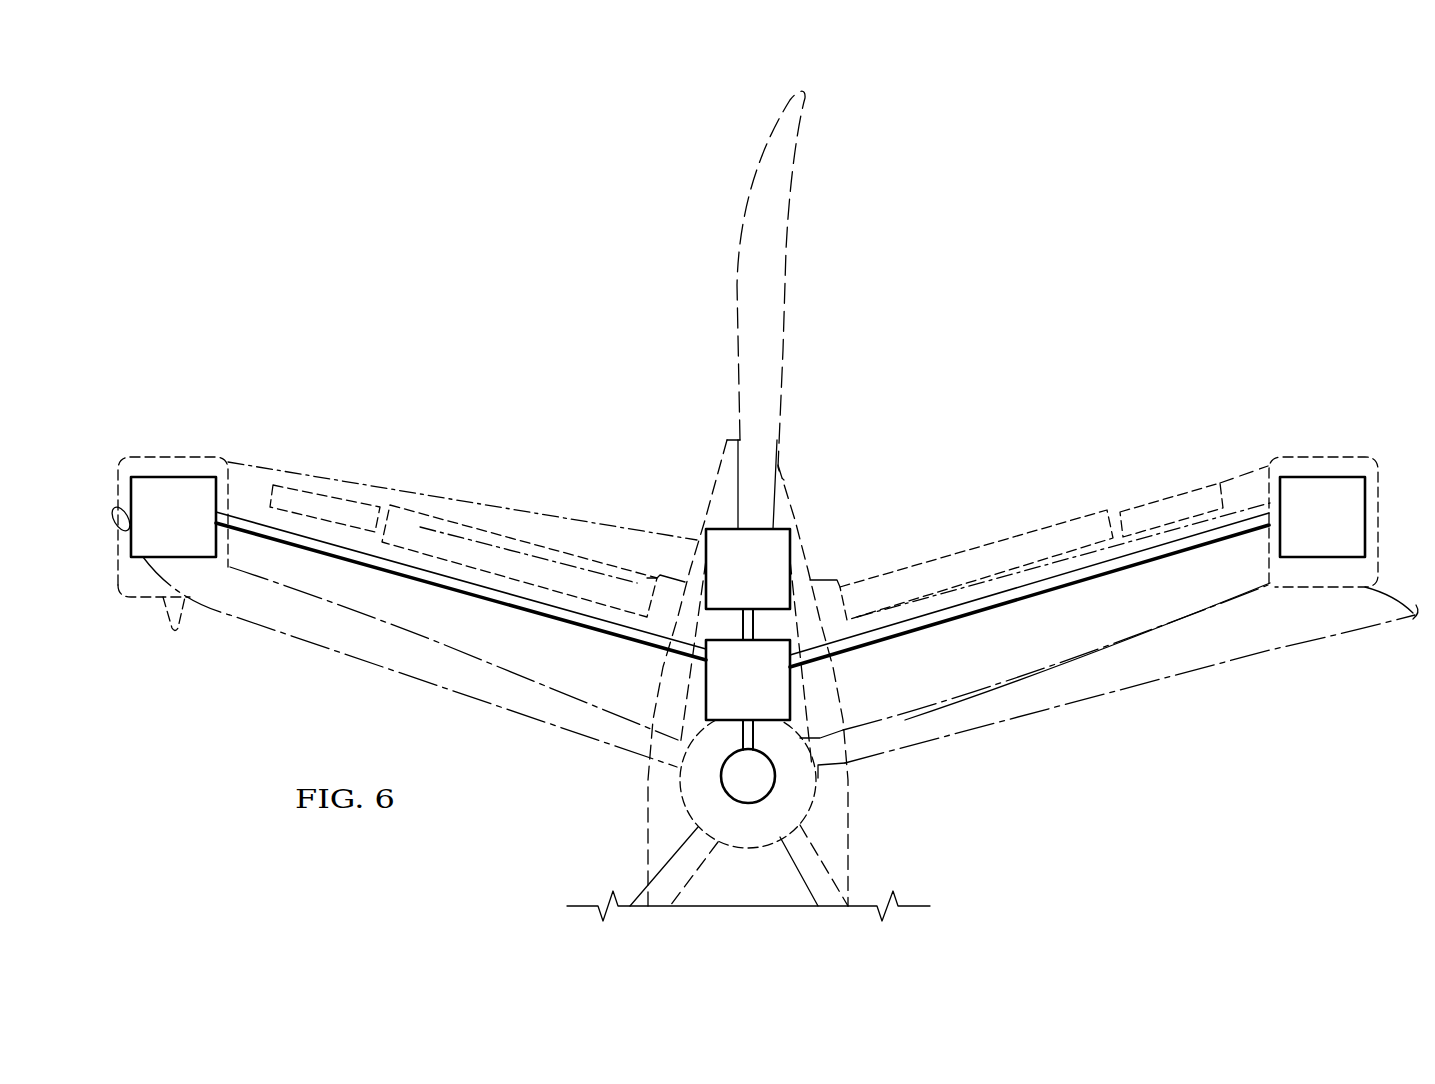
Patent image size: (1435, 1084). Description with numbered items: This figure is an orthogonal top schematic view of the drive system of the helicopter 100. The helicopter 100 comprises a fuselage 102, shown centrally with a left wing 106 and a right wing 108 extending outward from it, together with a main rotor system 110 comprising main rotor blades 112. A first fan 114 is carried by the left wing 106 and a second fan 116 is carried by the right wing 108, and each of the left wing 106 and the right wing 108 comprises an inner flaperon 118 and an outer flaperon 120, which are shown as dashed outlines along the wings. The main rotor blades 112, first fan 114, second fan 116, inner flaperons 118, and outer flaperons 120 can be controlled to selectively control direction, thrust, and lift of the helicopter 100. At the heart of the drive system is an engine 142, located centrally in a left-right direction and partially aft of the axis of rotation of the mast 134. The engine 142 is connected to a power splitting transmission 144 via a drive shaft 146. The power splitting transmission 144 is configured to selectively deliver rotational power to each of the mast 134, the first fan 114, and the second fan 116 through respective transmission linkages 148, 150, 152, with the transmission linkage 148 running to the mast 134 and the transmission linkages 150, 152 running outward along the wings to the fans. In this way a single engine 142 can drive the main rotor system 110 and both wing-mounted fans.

The helicopter 100 is at (983, 352).
The fuselage 102 is at (648, 853).
The left wing 106 is at (1073, 562).
The right wing 108 is at (420, 560).
The main rotor system 110 is at (810, 812).
The main rotor blades 112 is at (1143, 682).
The first fan 114 is at (1342, 533).
The second fan 116 is at (193, 533).
The inner flaperon 118 is at (560, 562).
The outer flaperon 120 is at (297, 488).
The mast 134 is at (723, 777).
The engine 142 is at (767, 584).
The power splitting transmission 144 is at (767, 694).
The drive shaft 146 is at (763, 633).
The transmission linkage 148 is at (755, 733).
The transmission linkage 150 is at (937, 622).
The transmission linkage 152 is at (603, 638).